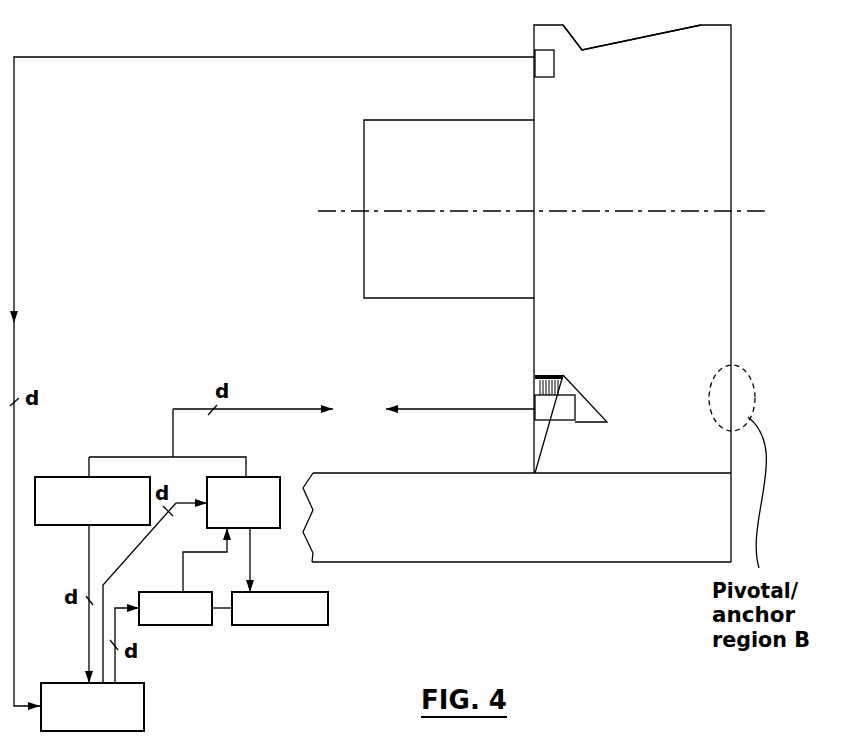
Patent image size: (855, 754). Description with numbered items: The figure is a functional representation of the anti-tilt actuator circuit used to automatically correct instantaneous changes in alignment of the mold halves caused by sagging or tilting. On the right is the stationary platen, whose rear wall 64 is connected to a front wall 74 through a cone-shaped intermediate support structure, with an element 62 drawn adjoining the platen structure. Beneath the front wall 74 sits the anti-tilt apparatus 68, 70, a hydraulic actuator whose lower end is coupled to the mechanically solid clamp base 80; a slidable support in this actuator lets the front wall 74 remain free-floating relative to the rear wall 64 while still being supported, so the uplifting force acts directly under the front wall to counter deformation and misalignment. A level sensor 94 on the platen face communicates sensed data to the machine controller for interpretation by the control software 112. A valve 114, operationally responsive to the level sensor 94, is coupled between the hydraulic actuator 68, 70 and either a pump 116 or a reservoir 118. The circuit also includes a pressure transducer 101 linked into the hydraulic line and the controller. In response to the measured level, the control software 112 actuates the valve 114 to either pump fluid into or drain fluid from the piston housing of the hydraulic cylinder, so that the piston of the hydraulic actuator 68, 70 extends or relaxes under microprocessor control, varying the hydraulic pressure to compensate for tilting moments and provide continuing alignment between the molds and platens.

The cylinder / housing 62 is at (431, 133).
The rear wall 64 is at (732, 67).
The anti-tilt apparatus 68 is at (533, 400).
The hydraulic actuator 70 is at (533, 400).
The front wall 74 is at (550, 37).
The clamp base 80 is at (586, 540).
The level sensor 94 is at (530, 52).
The pressure transducer 101 is at (67, 477).
The control software 112 is at (144, 697).
The valve 114 is at (284, 490).
The pump 116 is at (182, 625).
The reservoir 118 is at (265, 625).